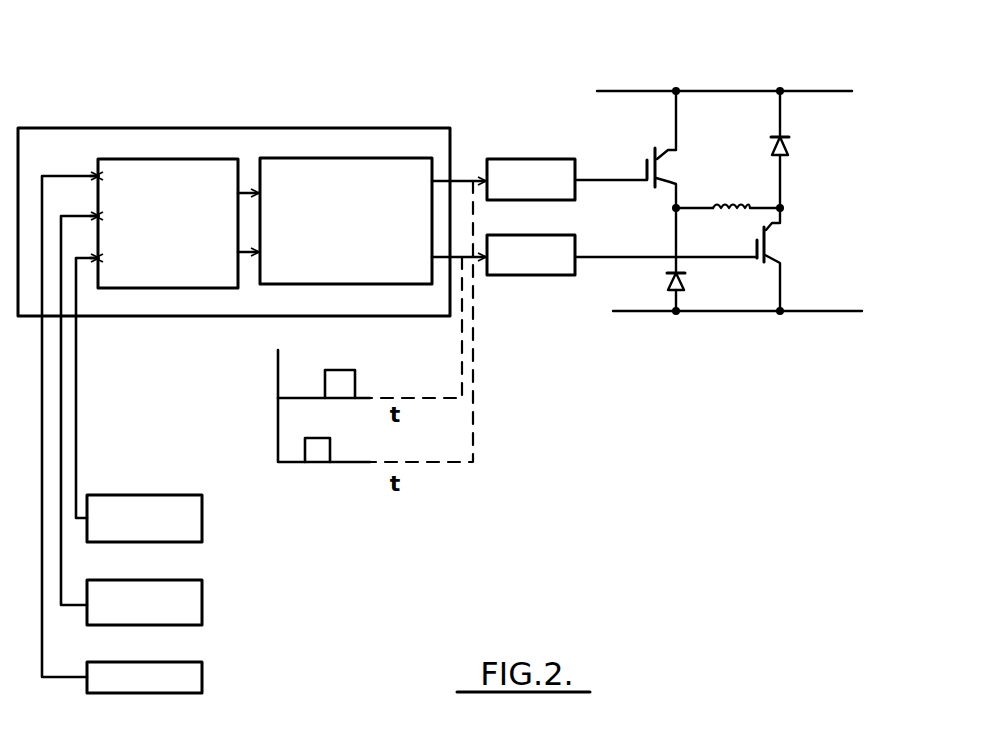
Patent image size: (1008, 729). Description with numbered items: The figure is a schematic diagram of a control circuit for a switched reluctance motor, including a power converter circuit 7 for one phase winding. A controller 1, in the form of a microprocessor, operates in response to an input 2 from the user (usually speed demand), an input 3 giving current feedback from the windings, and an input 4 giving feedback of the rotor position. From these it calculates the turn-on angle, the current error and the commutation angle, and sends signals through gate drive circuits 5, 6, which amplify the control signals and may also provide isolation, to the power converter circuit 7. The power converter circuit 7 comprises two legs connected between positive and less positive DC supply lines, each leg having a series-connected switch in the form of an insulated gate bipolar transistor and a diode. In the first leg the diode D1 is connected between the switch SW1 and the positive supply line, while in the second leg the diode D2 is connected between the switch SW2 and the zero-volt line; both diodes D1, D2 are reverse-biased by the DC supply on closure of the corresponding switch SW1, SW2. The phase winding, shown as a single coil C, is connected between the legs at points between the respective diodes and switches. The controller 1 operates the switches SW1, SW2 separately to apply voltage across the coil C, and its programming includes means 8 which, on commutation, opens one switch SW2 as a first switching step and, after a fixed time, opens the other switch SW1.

The controller 1 is at (152, 175).
The input 2 is at (196, 520).
The input 3 is at (196, 604).
The input 4 is at (198, 675).
The gate drive circuit 5 is at (537, 276).
The gate drive circuit 6 is at (518, 158).
The power converter circuit 7 is at (712, 196).
The means for controlling a switching operation 8 is at (334, 172).
The switch SW1 is at (788, 242).
The switch SW2 is at (650, 150).
The diode D1 is at (788, 146).
The diode D2 is at (688, 285).
The coil C is at (730, 202).